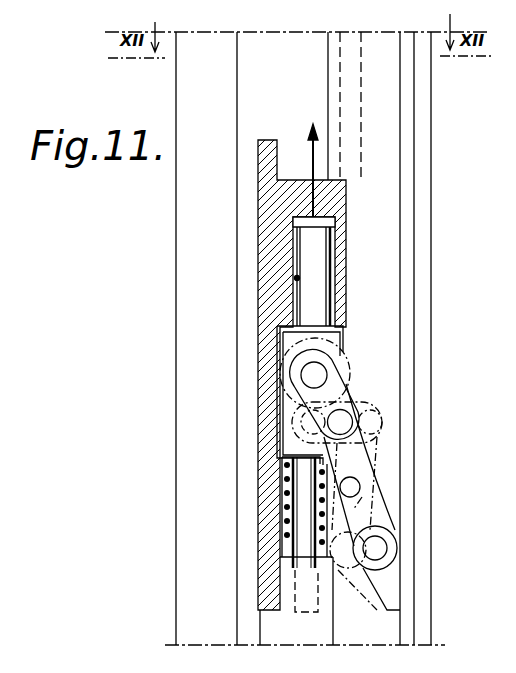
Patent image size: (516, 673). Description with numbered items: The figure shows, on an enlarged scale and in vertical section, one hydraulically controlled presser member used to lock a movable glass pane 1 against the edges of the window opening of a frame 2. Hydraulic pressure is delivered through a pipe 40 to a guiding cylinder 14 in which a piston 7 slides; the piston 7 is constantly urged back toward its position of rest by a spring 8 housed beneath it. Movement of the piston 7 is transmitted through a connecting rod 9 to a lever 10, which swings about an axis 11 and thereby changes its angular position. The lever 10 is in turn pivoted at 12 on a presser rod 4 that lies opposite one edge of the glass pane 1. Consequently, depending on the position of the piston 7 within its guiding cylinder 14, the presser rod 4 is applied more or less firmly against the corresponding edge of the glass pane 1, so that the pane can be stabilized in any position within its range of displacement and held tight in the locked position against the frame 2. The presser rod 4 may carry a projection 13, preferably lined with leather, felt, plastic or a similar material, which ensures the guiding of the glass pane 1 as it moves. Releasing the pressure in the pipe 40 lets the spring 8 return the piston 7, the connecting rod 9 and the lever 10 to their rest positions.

The glass pane 1 is at (352, 54).
The frame 2 is at (192, 263).
The presser rod 4 is at (426, 308).
The piston 7 is at (300, 308).
The spring 8 is at (293, 505).
The connecting rod 9 is at (333, 387).
The lever 10 is at (350, 463).
The axis 11 is at (350, 487).
The pivot 12 is at (372, 548).
The projection 13 is at (330, 168).
The guiding cylinder 14 is at (295, 279).
The pipe 40 is at (310, 163).